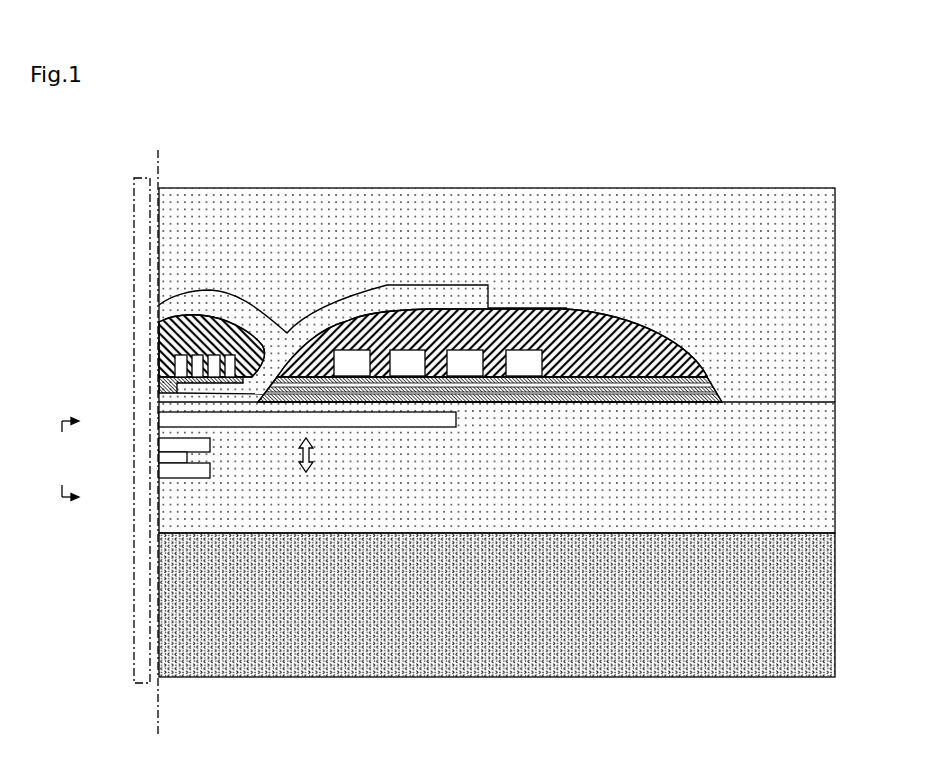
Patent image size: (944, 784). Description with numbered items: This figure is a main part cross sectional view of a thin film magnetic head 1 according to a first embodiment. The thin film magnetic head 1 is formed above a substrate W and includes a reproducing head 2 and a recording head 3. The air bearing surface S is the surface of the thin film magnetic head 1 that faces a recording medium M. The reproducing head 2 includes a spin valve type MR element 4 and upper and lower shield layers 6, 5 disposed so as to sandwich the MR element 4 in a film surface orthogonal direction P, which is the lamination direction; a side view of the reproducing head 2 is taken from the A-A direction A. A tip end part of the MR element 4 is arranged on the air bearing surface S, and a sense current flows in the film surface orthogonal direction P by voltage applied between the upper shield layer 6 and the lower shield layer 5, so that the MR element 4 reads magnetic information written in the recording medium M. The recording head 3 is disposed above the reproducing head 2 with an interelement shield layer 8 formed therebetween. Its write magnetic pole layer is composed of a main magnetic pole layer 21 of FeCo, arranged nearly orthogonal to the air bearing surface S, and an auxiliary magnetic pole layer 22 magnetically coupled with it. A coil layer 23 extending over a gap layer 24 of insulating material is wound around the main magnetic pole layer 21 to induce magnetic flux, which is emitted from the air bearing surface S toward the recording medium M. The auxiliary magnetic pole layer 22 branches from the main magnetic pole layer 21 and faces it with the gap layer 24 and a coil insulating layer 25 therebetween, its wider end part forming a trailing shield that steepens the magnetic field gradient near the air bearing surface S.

The thin film magnetic head 1 is at (847, 188).
The reproducing head 2 is at (232, 460).
The recording head 3 is at (293, 284).
The MR element 4 is at (159, 457).
The lower shield layer 5 is at (159, 470).
The upper shield layer 6 is at (159, 444).
The interelement shield layer 8 is at (159, 409).
The main magnetic pole layer 21 is at (159, 383).
The auxiliary magnetic pole layer 22 is at (159, 316).
The coil layer 23 is at (227, 355).
The gap layer 24 is at (159, 365).
The coil insulating layer 25 is at (159, 337).
The A-A direction A is at (80, 459).
The film surface orthogonal direction P is at (315, 455).
The recording medium M is at (134, 648).
The air bearing surface S is at (160, 444).
The substrate W is at (847, 538).